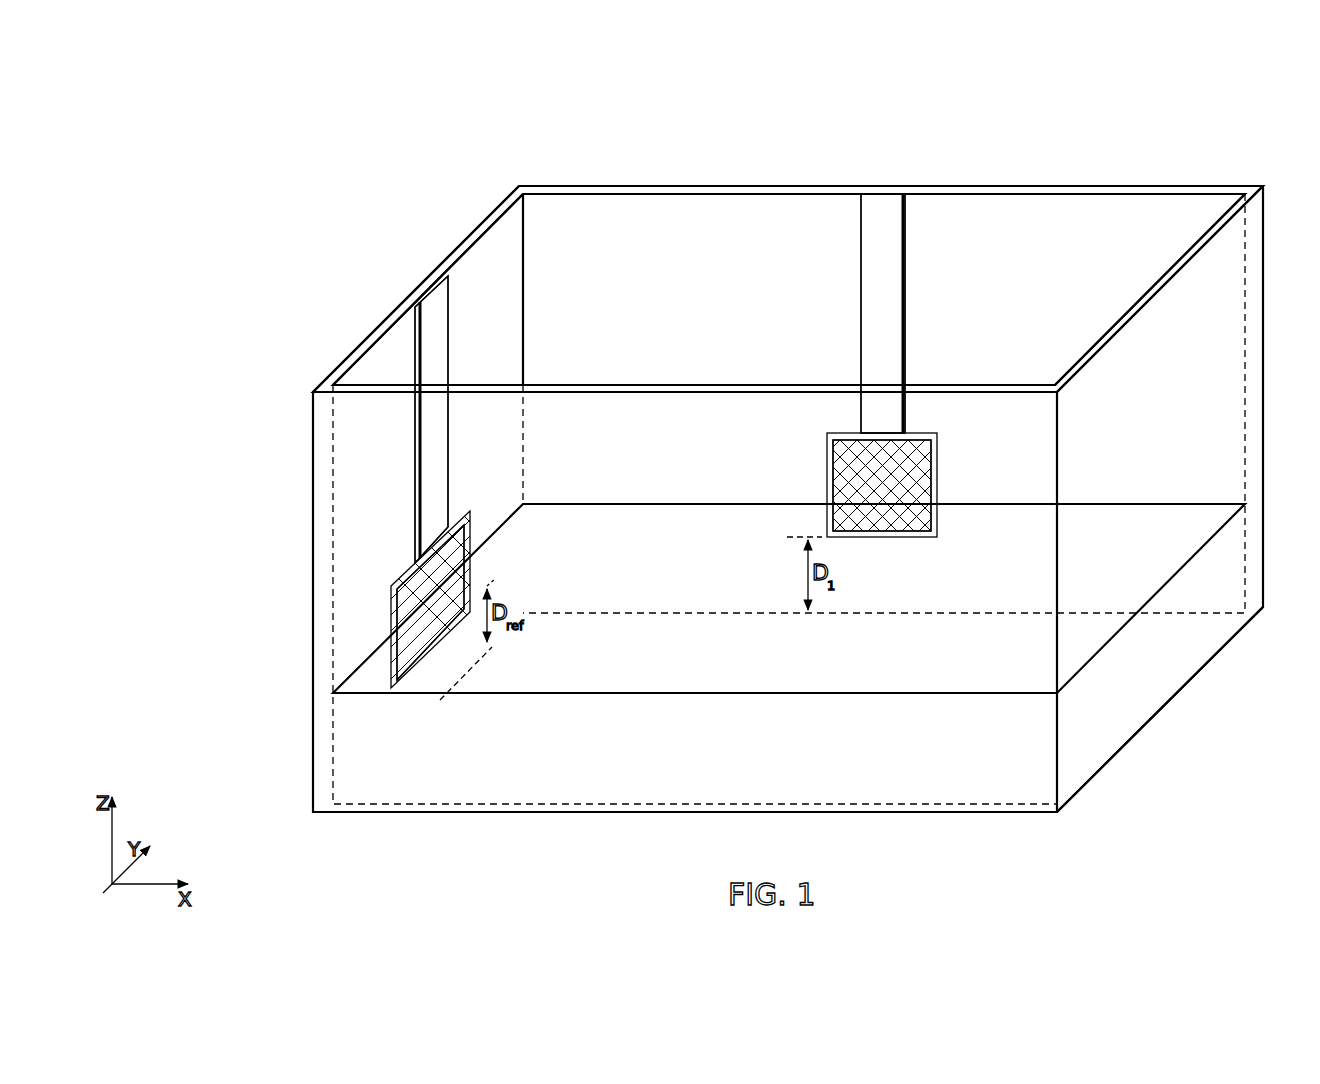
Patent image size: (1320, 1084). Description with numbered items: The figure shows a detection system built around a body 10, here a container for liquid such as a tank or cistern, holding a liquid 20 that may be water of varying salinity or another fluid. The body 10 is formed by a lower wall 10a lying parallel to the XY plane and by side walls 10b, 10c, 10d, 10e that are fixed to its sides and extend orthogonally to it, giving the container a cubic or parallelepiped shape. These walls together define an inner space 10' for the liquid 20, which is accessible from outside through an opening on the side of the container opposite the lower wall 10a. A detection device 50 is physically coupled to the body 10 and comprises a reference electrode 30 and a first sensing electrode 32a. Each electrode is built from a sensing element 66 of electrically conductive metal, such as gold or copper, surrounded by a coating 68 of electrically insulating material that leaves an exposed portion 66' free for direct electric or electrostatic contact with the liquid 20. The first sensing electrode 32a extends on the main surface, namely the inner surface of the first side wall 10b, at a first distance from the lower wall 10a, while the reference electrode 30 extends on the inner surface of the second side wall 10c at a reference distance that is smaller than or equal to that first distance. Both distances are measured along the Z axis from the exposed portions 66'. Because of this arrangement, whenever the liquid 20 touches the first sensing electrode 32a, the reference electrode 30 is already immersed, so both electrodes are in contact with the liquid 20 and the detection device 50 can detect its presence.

The body 10 is at (788, 471).
The inner space 10' is at (884, 170).
The lower wall 10a is at (960, 788).
The first side wall 10b is at (753, 227).
The second side wall 10c is at (480, 228).
The side wall 10d is at (692, 423).
The side wall 10e is at (1088, 382).
The liquid 20 is at (1227, 510).
The reference electrode 30 is at (408, 343).
The first sensing electrode 32a is at (910, 307).
The detection device 50 is at (917, 215).
The sensing element 66 is at (690, 555).
The exposed portion 66' is at (669, 548).
The coating 68 is at (872, 337).